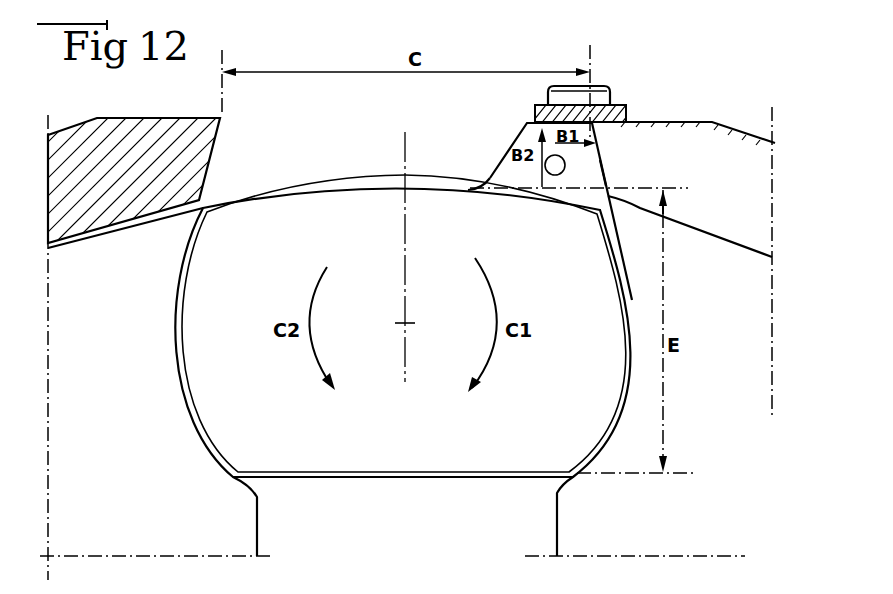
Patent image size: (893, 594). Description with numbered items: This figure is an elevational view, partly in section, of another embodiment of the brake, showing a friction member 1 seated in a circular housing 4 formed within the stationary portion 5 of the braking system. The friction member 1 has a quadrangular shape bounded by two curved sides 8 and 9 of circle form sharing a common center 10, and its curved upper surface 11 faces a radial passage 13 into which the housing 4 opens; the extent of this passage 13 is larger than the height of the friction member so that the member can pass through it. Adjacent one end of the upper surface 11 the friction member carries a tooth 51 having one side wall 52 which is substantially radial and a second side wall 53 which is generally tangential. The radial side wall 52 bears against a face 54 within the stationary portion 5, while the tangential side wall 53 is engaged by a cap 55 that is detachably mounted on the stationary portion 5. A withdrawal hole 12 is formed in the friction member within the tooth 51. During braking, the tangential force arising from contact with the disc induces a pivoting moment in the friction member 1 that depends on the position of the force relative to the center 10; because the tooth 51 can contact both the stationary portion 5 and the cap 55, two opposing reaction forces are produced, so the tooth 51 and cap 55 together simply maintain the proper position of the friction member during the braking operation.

The friction member 1 is at (332, 446).
The circular housing 4 is at (200, 213).
The stationary portion 5 is at (162, 131).
The curved side 8 is at (184, 288).
The curved side 9 is at (614, 281).
The center 10 is at (406, 324).
The upper surface 11 is at (507, 190).
The withdrawal hole 12 is at (548, 169).
The radial passage 13 is at (328, 133).
The tooth 51 is at (528, 132).
The side wall 52 is at (601, 169).
The second side wall 53 is at (553, 126).
The face 54 is at (601, 157).
The cap 55 is at (625, 116).